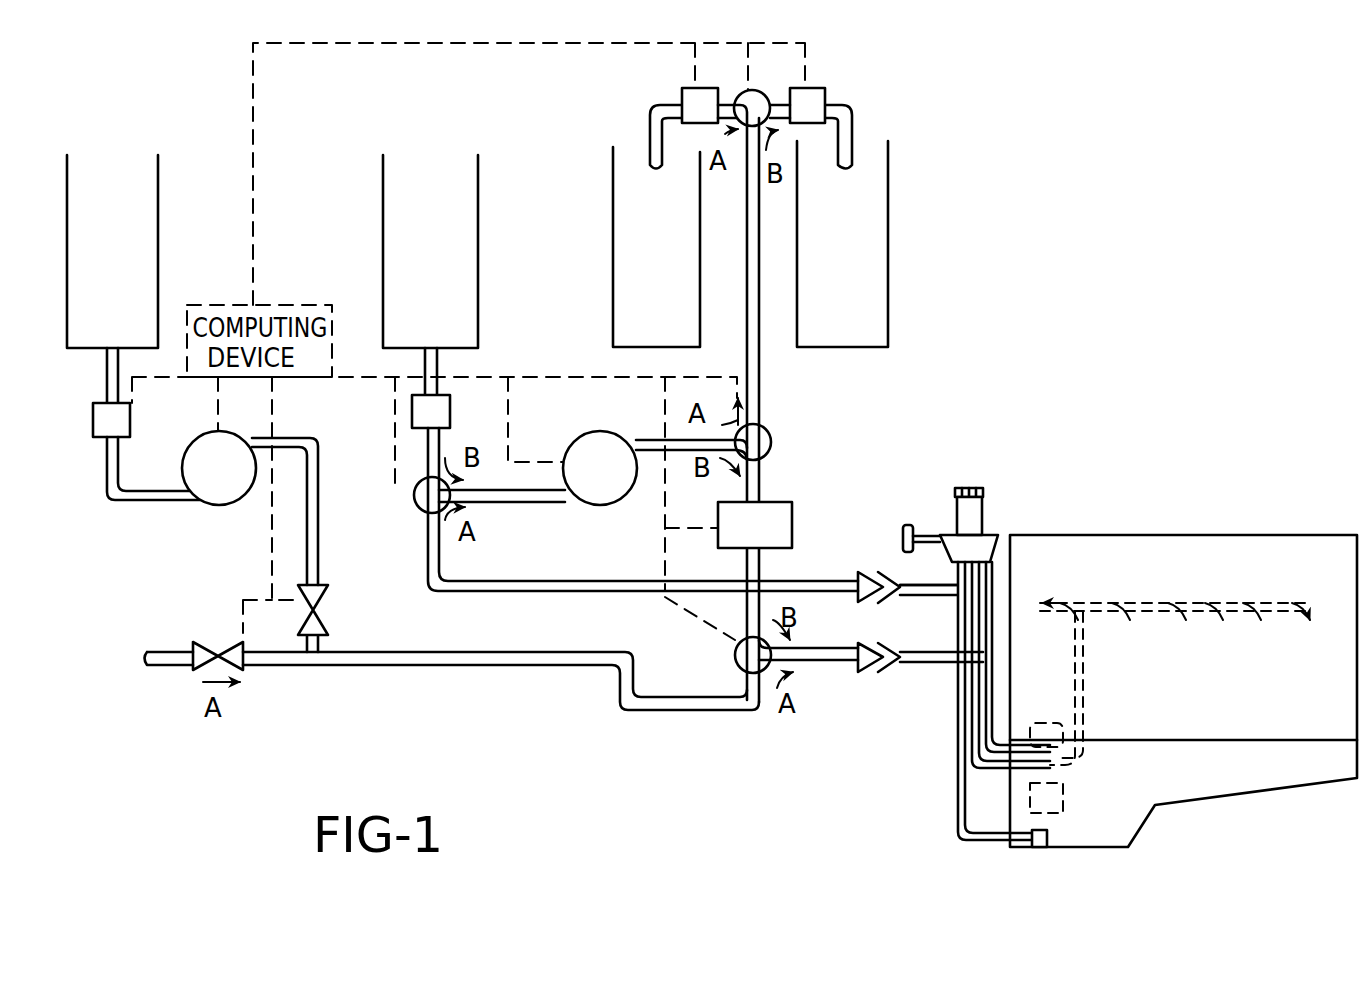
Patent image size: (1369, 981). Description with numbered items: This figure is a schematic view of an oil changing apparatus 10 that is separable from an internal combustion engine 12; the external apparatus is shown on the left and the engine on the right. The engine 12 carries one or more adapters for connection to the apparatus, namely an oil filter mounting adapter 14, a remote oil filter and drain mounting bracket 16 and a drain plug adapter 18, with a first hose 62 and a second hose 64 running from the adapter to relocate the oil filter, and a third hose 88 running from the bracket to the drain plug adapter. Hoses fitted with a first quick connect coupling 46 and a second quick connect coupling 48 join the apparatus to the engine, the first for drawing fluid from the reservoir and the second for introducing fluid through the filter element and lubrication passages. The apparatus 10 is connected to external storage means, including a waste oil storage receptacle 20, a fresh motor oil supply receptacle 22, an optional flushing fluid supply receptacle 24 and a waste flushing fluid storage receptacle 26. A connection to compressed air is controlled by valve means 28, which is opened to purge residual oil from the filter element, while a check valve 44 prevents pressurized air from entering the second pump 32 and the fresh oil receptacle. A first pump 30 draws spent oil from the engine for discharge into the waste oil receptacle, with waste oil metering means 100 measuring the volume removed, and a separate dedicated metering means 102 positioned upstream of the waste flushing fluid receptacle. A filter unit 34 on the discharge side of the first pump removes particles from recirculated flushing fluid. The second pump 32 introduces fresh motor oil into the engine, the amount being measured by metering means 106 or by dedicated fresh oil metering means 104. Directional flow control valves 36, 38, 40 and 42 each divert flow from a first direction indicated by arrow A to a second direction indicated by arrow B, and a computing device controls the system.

The oil changing apparatus 10 is at (882, 448).
The internal combustion engine 12 is at (1143, 520).
The oil filter mounting adapter 14 is at (1100, 743).
The remote oil filter and drain mounting bracket 16 is at (1040, 478).
The drain plug adapter 18 is at (1045, 850).
The waste oil storage receptacle 20 is at (613, 228).
The fresh motor oil supply receptacle 22 is at (158, 232).
The flushing fluid supply receptacle 24 is at (383, 233).
The waste flushing fluid storage receptacle 26 is at (888, 243).
The valve means 28 is at (216, 640).
The first pump 30 is at (582, 430).
The second pump 32 is at (195, 441).
The filter unit 34 is at (792, 513).
The directional flow control valve 36 is at (737, 662).
The directional flow control valve 38 is at (412, 500).
The directional flow control valve 40 is at (770, 437).
The directional flow control valve 42 is at (770, 90).
The check valve 44 is at (332, 615).
The first quick connect coupling 46 is at (843, 566).
The second quick connect coupling 48 is at (860, 680).
The first hose 62 is at (993, 708).
The second hose 64 is at (990, 770).
The third hose 88 is at (958, 773).
The waste oil metering means 100 is at (688, 96).
The dedicated metering means 102 is at (826, 92).
The dedicated fresh oil metering means 104 is at (100, 438).
The metering means 106 is at (412, 410).